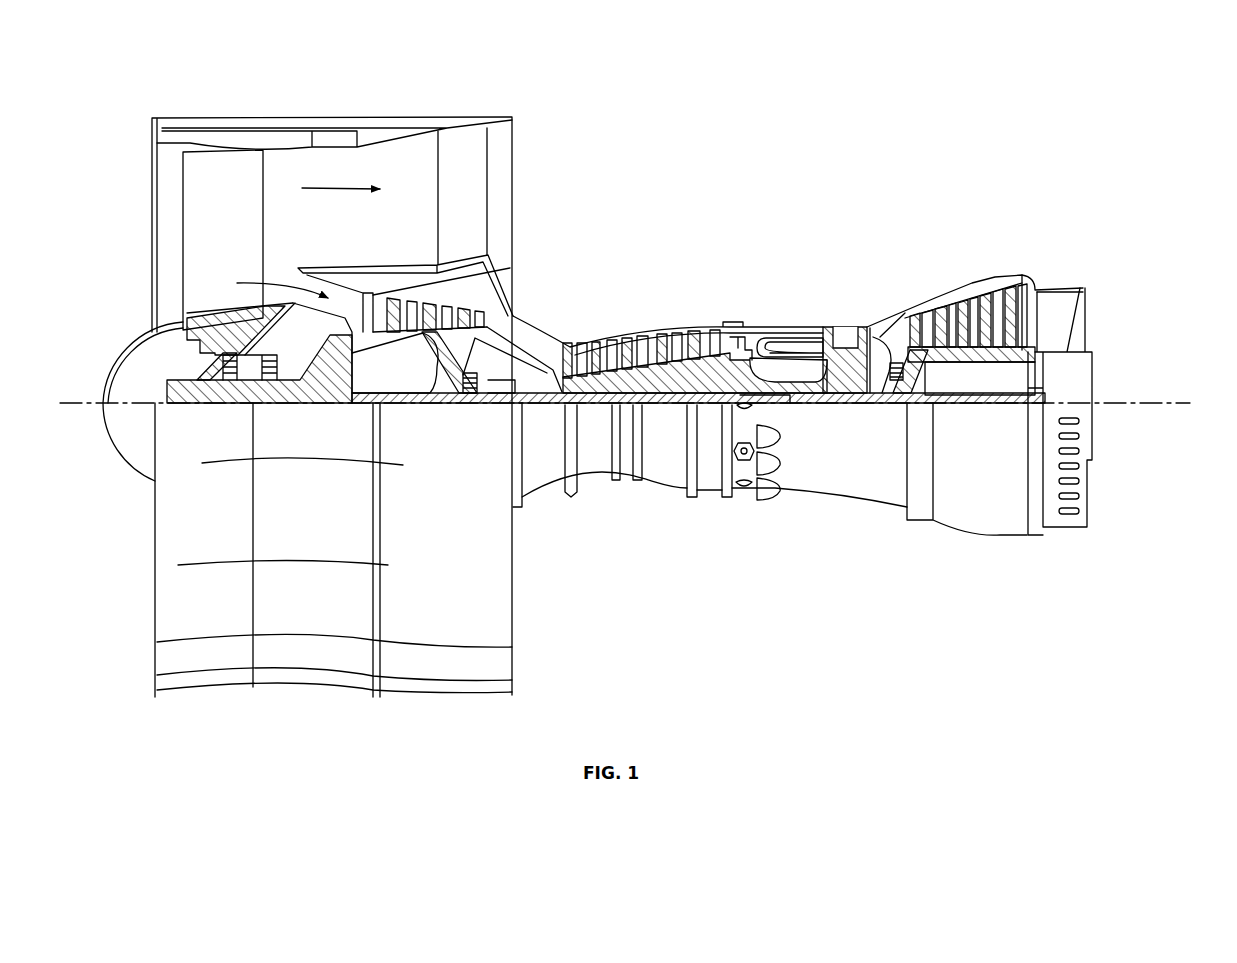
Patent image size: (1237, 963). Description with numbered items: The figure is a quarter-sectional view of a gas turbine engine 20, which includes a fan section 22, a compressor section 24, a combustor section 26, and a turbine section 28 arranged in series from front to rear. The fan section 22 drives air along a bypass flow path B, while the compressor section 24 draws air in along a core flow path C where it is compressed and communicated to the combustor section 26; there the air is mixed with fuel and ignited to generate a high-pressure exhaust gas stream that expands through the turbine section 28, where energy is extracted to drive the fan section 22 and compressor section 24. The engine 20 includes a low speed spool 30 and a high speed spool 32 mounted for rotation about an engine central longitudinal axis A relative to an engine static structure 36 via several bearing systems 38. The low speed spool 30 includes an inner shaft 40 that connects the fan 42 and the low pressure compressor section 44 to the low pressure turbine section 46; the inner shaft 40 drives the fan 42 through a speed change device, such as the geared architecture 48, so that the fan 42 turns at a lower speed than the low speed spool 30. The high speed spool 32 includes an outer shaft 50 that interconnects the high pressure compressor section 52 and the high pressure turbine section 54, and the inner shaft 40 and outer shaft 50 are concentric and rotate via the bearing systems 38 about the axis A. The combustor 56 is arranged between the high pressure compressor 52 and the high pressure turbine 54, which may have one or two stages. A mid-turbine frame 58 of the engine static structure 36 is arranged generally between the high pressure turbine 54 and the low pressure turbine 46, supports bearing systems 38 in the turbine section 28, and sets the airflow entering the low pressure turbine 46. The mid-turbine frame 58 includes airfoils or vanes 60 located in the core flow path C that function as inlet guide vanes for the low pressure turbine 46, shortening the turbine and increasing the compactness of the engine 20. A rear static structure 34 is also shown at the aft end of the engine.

The gas turbine engine 20 is at (884, 128).
The fan section 22 is at (352, 102).
The compressor section 24 is at (720, 215).
The combustor section 26 is at (830, 215).
The turbine section 28 is at (1048, 215).
The low speed spool 30 is at (670, 420).
The high speed spool 32 is at (703, 348).
The engine static structure 34 is at (972, 363).
The engine static structure 36 is at (705, 508).
The bearing systems 38 is at (232, 379).
The inner shaft 40 is at (525, 408).
The fan 42 is at (226, 245).
The low pressure compressor section 44 is at (450, 312).
The low pressure turbine section 46 is at (966, 300).
The geared architecture 48 is at (340, 382).
The outer shaft 50 is at (795, 405).
The high pressure compressor section 52 is at (628, 344).
The high pressure turbine section 54 is at (845, 330).
The combustor 56 is at (773, 345).
The mid-turbine frame 58 is at (884, 303).
The airfoils/vanes 60 is at (928, 352).
The engine central longitudinal axis A is at (1163, 403).
The bypass flow path B is at (347, 186).
The core flow path C is at (271, 287).